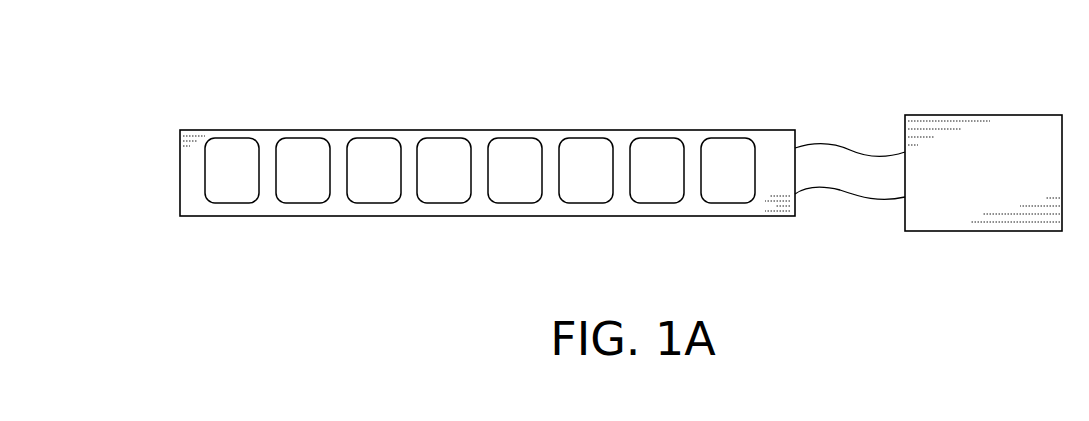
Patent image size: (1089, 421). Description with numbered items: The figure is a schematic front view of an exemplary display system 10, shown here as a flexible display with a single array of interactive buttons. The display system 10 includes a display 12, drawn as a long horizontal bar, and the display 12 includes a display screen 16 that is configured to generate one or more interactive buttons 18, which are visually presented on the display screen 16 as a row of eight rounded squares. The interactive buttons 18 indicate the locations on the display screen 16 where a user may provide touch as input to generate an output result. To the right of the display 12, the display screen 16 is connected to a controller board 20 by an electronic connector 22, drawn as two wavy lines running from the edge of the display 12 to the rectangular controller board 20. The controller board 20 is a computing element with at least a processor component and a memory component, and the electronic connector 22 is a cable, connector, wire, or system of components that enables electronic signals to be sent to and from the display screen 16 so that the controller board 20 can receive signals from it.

The display system 10 is at (700, 62).
The display 12 is at (138, 167).
The display screen 16 is at (479, 138).
The interactive buttons 18 is at (230, 197).
The controller board 20 is at (1010, 137).
The electronic connector 22 is at (853, 182).